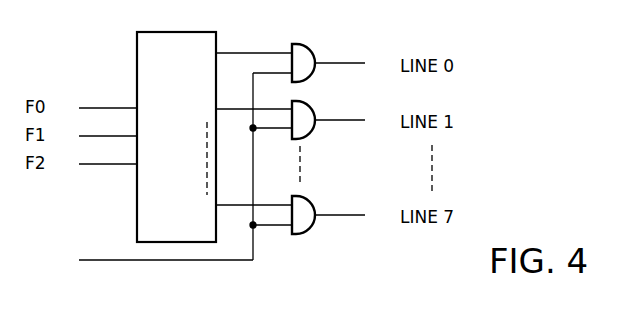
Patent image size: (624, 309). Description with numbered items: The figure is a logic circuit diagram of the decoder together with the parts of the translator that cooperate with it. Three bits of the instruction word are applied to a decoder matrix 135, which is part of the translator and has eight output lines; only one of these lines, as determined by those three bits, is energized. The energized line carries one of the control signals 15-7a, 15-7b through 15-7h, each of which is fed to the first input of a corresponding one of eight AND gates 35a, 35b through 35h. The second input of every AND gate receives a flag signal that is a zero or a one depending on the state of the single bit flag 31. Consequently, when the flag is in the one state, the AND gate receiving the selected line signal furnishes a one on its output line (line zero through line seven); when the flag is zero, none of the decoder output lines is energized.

The decoder matrix 135 is at (177, 41).
The single bit flag 31 is at (157, 170).
The control signal 15-7a is at (254, 41).
The control signal 15-7b is at (254, 96).
The control signal 15-7h is at (254, 192).
The AND gate 35a is at (310, 55).
The AND gate 35b is at (310, 114).
The AND gate 35h is at (310, 210).